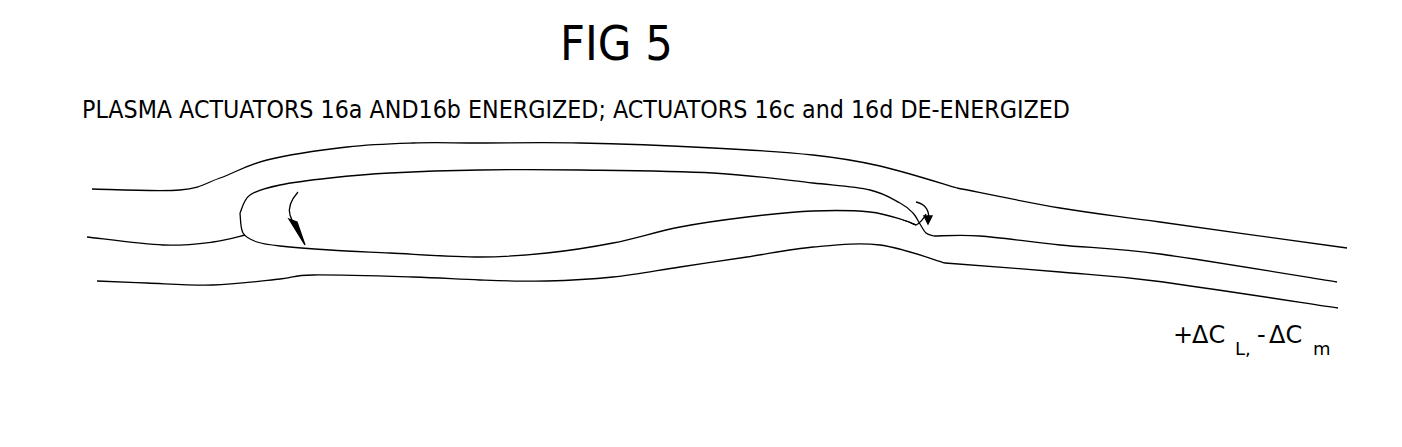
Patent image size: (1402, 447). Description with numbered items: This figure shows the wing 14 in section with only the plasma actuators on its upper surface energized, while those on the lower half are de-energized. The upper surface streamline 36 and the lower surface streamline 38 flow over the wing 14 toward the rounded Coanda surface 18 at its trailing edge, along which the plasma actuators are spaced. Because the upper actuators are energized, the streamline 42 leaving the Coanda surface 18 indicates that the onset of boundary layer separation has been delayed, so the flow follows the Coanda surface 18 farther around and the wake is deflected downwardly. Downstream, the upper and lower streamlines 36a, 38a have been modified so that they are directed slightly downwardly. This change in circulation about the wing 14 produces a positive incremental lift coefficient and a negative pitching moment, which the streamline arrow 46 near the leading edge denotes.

The wing 14 is at (505, 225).
The Coanda surface 18 is at (916, 222).
The upper surface streamline 36 is at (738, 148).
The modified upper surface streamline 36a is at (957, 188).
The lower surface streamline 38 is at (557, 282).
The modified lower surface streamline 38a is at (945, 263).
The streamline 42 is at (945, 235).
The streamline arrow 46 is at (290, 213).